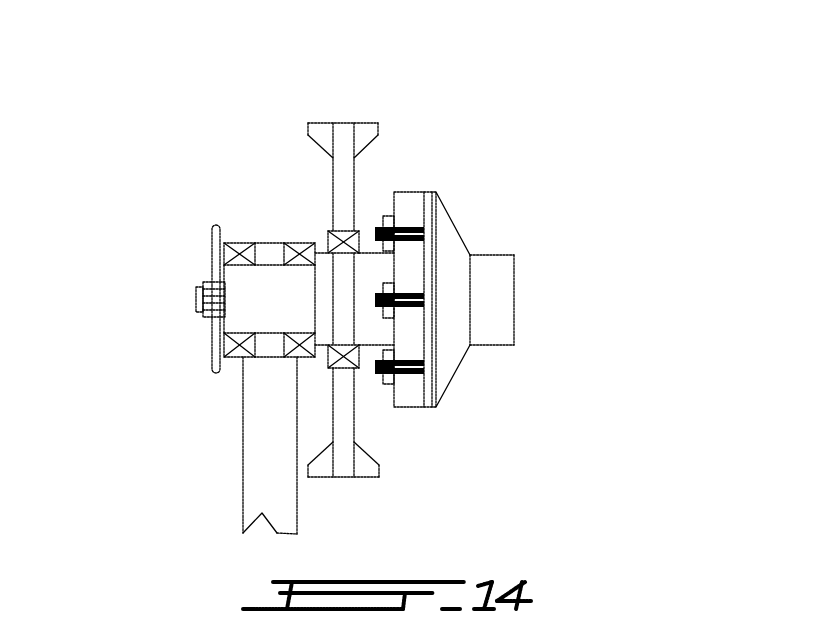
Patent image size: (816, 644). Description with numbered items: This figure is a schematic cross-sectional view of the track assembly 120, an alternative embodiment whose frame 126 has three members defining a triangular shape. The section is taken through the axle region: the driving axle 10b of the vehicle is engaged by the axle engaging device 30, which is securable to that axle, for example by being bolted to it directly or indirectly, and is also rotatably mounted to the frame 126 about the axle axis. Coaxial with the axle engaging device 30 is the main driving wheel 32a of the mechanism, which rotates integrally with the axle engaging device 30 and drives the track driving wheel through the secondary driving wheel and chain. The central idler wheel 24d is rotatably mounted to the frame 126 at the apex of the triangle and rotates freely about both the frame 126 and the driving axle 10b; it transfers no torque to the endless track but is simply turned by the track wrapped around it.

The track assembly 120 is at (598, 179).
The central idler wheel 24d is at (345, 122).
The axle engaging device 30 is at (415, 174).
The main driving wheel 32a is at (211, 235).
The frame 126 is at (265, 427).
The driving axle 10b is at (490, 346).